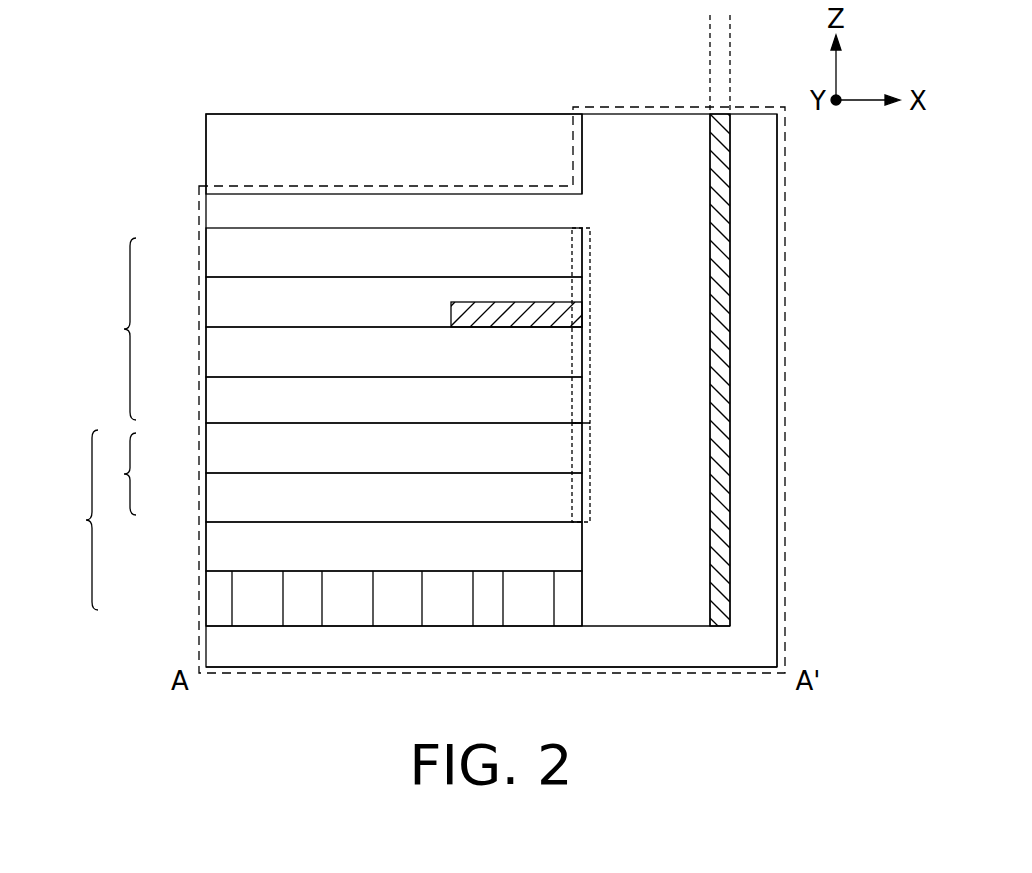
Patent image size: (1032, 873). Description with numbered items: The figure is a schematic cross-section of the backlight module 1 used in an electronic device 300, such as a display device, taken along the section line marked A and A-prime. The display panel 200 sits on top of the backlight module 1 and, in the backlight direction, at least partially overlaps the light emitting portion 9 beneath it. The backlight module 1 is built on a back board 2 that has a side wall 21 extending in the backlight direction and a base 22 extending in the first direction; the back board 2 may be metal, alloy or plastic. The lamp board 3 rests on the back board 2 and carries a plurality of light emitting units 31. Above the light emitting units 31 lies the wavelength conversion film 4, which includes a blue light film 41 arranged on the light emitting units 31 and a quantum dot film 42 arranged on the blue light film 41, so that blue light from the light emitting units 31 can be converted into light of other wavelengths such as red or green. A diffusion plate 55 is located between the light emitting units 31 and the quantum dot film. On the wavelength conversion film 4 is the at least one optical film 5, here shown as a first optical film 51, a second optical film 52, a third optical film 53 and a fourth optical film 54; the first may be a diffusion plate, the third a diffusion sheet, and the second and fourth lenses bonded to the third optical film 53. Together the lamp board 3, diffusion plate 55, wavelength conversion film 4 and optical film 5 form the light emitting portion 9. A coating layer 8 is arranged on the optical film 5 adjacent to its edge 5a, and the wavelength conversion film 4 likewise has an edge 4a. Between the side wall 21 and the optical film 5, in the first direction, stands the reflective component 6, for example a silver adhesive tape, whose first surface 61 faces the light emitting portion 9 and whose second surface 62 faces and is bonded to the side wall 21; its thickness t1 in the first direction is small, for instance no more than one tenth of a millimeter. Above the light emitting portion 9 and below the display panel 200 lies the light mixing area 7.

The backlight module 1 is at (786, 195).
The back board 2 is at (496, 422).
The side wall 21 is at (760, 318).
The base 22 is at (222, 650).
The lamp board 3 is at (222, 603).
The light emitting units 31 is at (258, 614).
The wavelength conversion film 4 is at (392, 472).
The blue light film 41 is at (222, 498).
The quantum dot film 42 is at (222, 450).
The edge of the wavelength conversion film 4a is at (591, 488).
The optical film 5 is at (392, 325).
The first optical film 51 is at (220, 403).
The second optical film 52 is at (220, 353).
The third optical film 53 is at (220, 303).
The fourth optical film 54 is at (220, 253).
The edge of the optical film 5a is at (591, 252).
The diffusion plate 55 is at (222, 555).
The reflective component 6 is at (730, 265).
The first surface 61 is at (710, 152).
The second surface 62 is at (730, 155).
The light mixing area 7 is at (627, 150).
The coating layer 8 is at (560, 315).
The light emitting portion 9 is at (371, 481).
The display panel 200 is at (280, 128).
The electronic device 300 is at (137, 92).
The thickness t1 is at (718, 57).